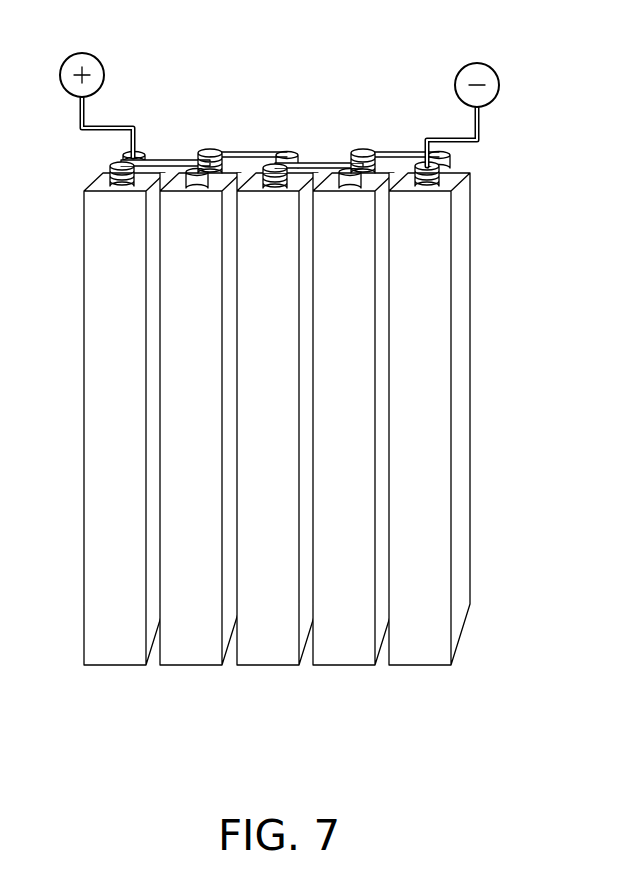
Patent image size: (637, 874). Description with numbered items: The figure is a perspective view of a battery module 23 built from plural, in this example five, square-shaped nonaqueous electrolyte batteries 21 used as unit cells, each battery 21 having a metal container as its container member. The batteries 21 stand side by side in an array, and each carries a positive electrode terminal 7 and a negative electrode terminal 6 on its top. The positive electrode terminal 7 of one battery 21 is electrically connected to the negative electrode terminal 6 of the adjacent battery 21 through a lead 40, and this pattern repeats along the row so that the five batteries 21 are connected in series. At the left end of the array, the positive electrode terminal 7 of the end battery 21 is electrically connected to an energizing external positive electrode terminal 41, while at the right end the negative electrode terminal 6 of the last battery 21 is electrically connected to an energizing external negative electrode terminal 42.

The negative electrode terminal 6 is at (357, 157).
The positive electrode terminal 7 is at (347, 160).
The square-shaped nonaqueous electrolyte battery 21 is at (453, 700).
The battery module 23 is at (277, 468).
The lead 40 is at (251, 151).
The energizing external positive electrode terminal 41 is at (84, 52).
The energizing external negative electrode terminal 42 is at (478, 62).